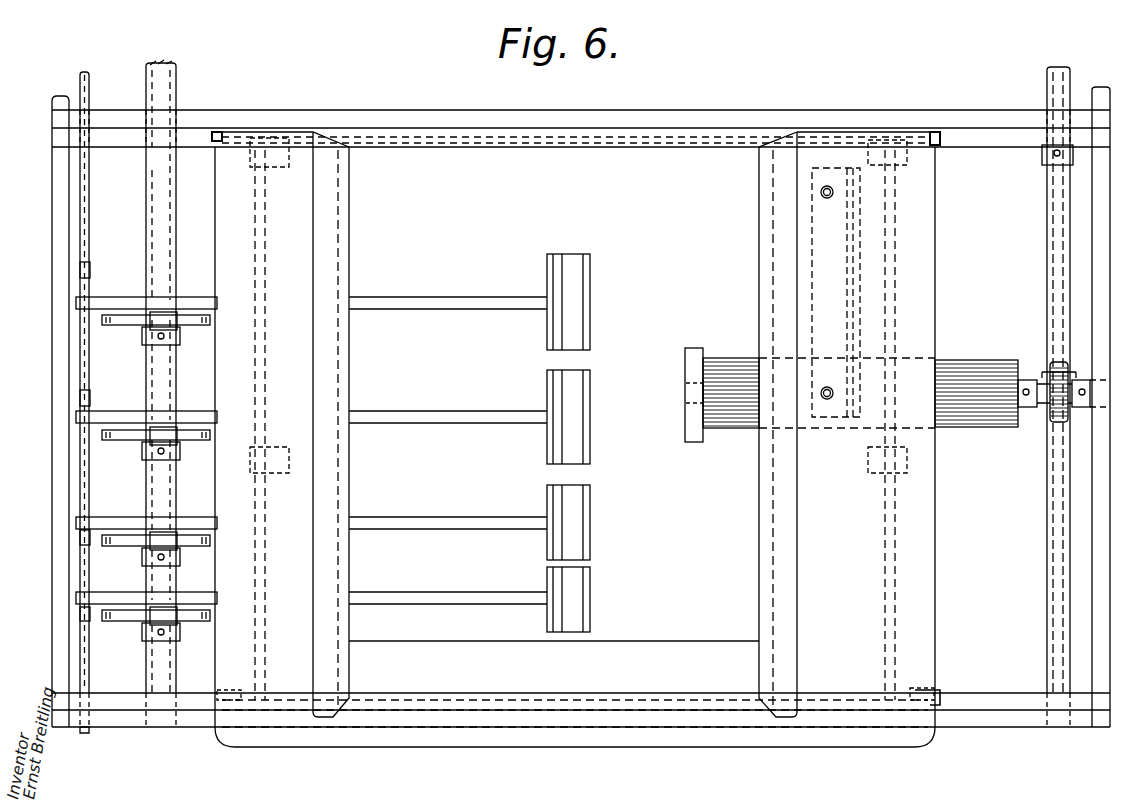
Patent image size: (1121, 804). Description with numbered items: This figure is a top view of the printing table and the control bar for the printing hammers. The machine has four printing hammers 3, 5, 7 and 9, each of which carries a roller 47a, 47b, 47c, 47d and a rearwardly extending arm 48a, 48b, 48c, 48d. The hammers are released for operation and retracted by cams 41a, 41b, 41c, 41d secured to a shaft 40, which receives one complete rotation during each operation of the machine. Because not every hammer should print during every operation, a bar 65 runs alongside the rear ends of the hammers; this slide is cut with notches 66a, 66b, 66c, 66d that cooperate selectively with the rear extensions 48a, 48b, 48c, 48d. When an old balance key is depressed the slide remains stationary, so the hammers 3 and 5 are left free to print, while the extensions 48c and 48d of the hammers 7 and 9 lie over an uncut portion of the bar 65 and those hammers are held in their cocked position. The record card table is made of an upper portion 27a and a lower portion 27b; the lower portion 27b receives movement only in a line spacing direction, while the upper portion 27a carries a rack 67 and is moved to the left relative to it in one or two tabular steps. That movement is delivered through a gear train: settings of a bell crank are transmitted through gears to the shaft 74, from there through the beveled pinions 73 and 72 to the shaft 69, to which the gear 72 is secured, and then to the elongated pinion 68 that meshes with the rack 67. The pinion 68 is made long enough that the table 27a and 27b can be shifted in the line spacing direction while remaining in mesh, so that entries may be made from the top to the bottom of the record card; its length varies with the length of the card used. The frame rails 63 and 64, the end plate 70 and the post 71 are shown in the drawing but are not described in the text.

The printing hammer 3 is at (582, 598).
The printing hammer 5 is at (582, 520).
The printing hammer 7 is at (582, 418).
The printing hammer 9 is at (582, 304).
The upper portion of the table 27a is at (297, 157).
The lower portion of the table 27b is at (218, 130).
The shaft 40 is at (166, 172).
The cam 41a is at (159, 616).
The cam 41b is at (159, 528).
The cam 41c is at (159, 425).
The cam 41d is at (159, 310).
The roller 47a is at (172, 613).
The roller 47b is at (172, 538).
The roller 47c is at (172, 433).
The roller 47d is at (172, 318).
The rearwardly extending arm 48a is at (76, 598).
The rearwardly extending arm 48b is at (76, 523).
The rearwardly extending arm 48c is at (76, 417).
The rearwardly extending arm 48d is at (76, 303).
The upper frame rail 63 is at (945, 118).
The lower frame rail 64 is at (968, 722).
The bar 65 is at (88, 174).
The notch 66a is at (88, 616).
The notch 66b is at (82, 537).
The notch 66c is at (90, 396).
The notch 66d is at (90, 265).
The rack 67 is at (856, 280).
The elongated pinion 68 is at (961, 368).
The shaft 69 is at (695, 408).
The end plate 70 is at (689, 368).
The right frame post 71 is at (1101, 452).
The beveled pinion 72 is at (1057, 425).
The beveled pinion 73 is at (1032, 378).
The shaft 74 is at (1055, 213).